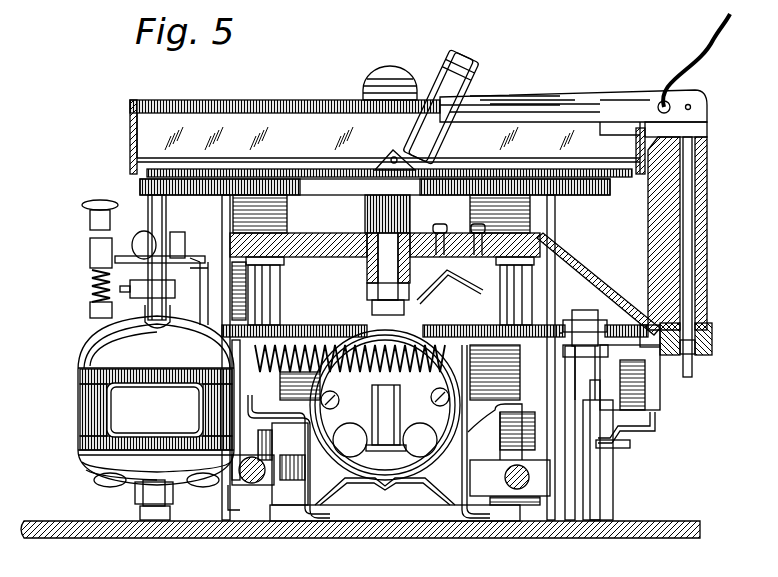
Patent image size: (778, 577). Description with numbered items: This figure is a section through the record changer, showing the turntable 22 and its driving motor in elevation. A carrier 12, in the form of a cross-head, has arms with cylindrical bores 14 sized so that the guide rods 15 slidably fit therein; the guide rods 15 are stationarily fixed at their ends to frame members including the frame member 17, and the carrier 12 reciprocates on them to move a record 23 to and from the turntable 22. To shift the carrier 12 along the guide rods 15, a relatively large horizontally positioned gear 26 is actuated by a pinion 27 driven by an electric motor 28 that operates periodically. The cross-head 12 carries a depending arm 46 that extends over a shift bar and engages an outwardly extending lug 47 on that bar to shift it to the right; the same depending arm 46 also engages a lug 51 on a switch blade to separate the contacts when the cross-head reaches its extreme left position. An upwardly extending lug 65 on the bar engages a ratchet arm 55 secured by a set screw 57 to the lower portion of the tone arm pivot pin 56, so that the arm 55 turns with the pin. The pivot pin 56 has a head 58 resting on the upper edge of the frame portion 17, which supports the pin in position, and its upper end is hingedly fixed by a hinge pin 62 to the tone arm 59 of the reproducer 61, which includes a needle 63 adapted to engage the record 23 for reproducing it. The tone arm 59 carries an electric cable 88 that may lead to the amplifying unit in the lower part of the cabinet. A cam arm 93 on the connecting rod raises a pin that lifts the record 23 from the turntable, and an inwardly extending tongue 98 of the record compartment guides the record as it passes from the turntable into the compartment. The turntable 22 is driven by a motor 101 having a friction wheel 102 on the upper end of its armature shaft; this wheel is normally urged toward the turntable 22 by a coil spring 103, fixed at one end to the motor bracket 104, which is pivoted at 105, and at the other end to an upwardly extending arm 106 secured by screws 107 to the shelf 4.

The shelf 4 is at (590, 526).
The carrier 12 is at (325, 258).
The cylindrical bores 14 is at (290, 233).
The guide rods 15 is at (235, 242).
The frame member 17 is at (708, 193).
The turntable 22 is at (594, 180).
The record 23 is at (628, 180).
The gear 26 is at (295, 332).
The pinion 27 is at (430, 322).
The electric motor 28 is at (368, 332).
The depending arm 46 is at (658, 420).
The lug 47 is at (655, 378).
The lug 51 is at (632, 445).
The ratchet arm 55 is at (650, 330).
The tone arm pivot pin 56 is at (692, 290).
The set screw 57 is at (712, 328).
The head 58 is at (700, 126).
The tone arm 59 is at (515, 95).
The reproducer 61 is at (458, 52).
The hinge pin 62 is at (692, 106).
The needle 63 is at (394, 152).
The upwardly extending lug 65 is at (598, 325).
The electric cable 88 is at (712, 38).
The cam arm 93 is at (455, 280).
The tongue 98 is at (384, 70).
The motor 101 is at (88, 352).
The friction wheel 102 is at (140, 185).
The coil spring 103 is at (344, 372).
The motor bracket 104 is at (232, 424).
The pivot 105 is at (258, 480).
The upwardly extending arm 106 is at (500, 410).
The screws 107 is at (525, 522).